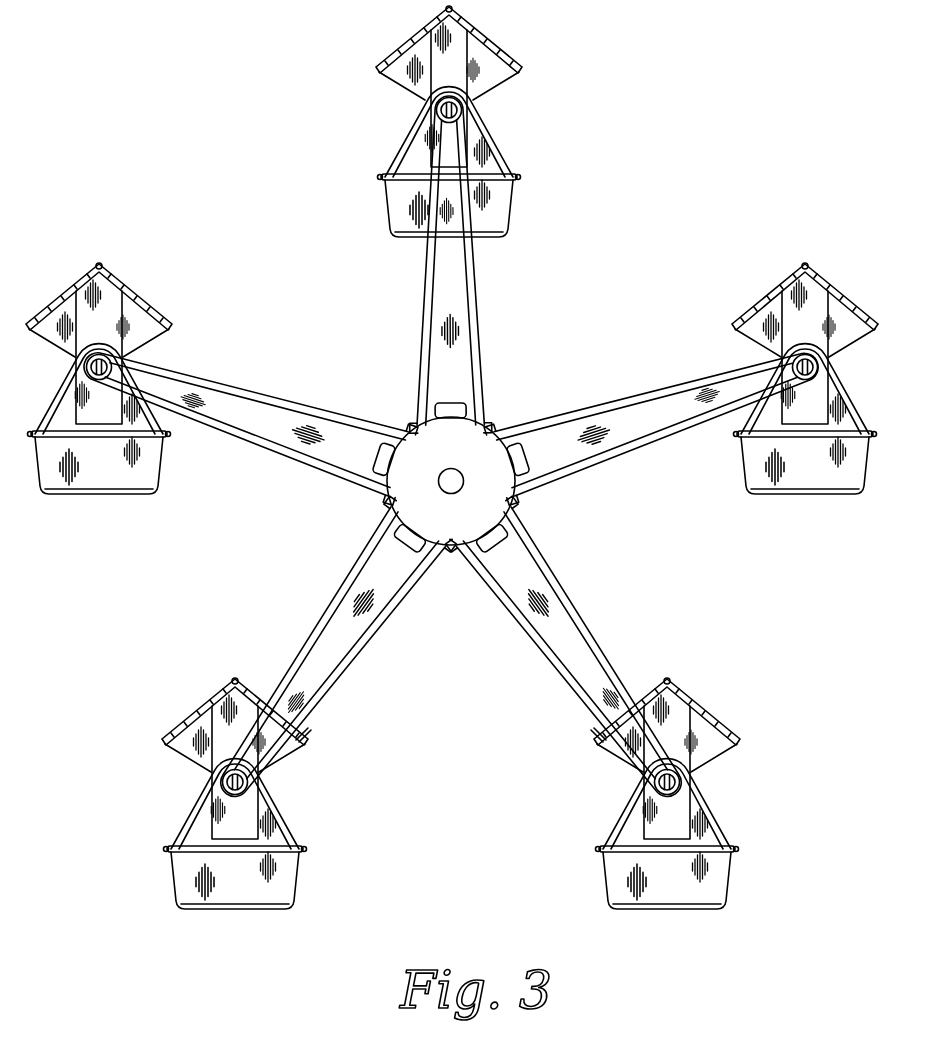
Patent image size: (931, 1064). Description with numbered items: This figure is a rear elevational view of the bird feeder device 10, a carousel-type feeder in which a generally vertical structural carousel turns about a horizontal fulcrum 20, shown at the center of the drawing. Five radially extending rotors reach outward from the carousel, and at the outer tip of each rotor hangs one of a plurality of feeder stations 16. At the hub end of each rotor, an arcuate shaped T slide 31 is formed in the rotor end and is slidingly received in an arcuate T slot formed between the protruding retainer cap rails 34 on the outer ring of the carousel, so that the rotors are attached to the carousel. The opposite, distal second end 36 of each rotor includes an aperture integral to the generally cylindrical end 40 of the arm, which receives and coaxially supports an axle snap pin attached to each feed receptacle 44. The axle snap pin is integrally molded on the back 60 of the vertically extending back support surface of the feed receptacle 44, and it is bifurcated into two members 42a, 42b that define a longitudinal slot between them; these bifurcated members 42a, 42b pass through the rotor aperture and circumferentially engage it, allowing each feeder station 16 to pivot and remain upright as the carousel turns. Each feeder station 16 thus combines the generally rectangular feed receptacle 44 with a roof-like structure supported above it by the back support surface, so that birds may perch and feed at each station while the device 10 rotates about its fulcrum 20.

The bird feeder device 10 is at (664, 157).
The feeder station 16 is at (193, 793).
The horizontal fulcrum 20 is at (463, 478).
The arcuate shaped T slide 31 is at (401, 427).
The protruding retainer cap rail 34 is at (412, 420).
The second end of rotor 36 is at (653, 762).
The generally cylindrical end 40 is at (670, 796).
The bifurcated member 42a is at (682, 788).
The bifurcated member 42b is at (652, 781).
The feed receptacle 44 is at (289, 885).
The back of support surface 60 is at (282, 832).